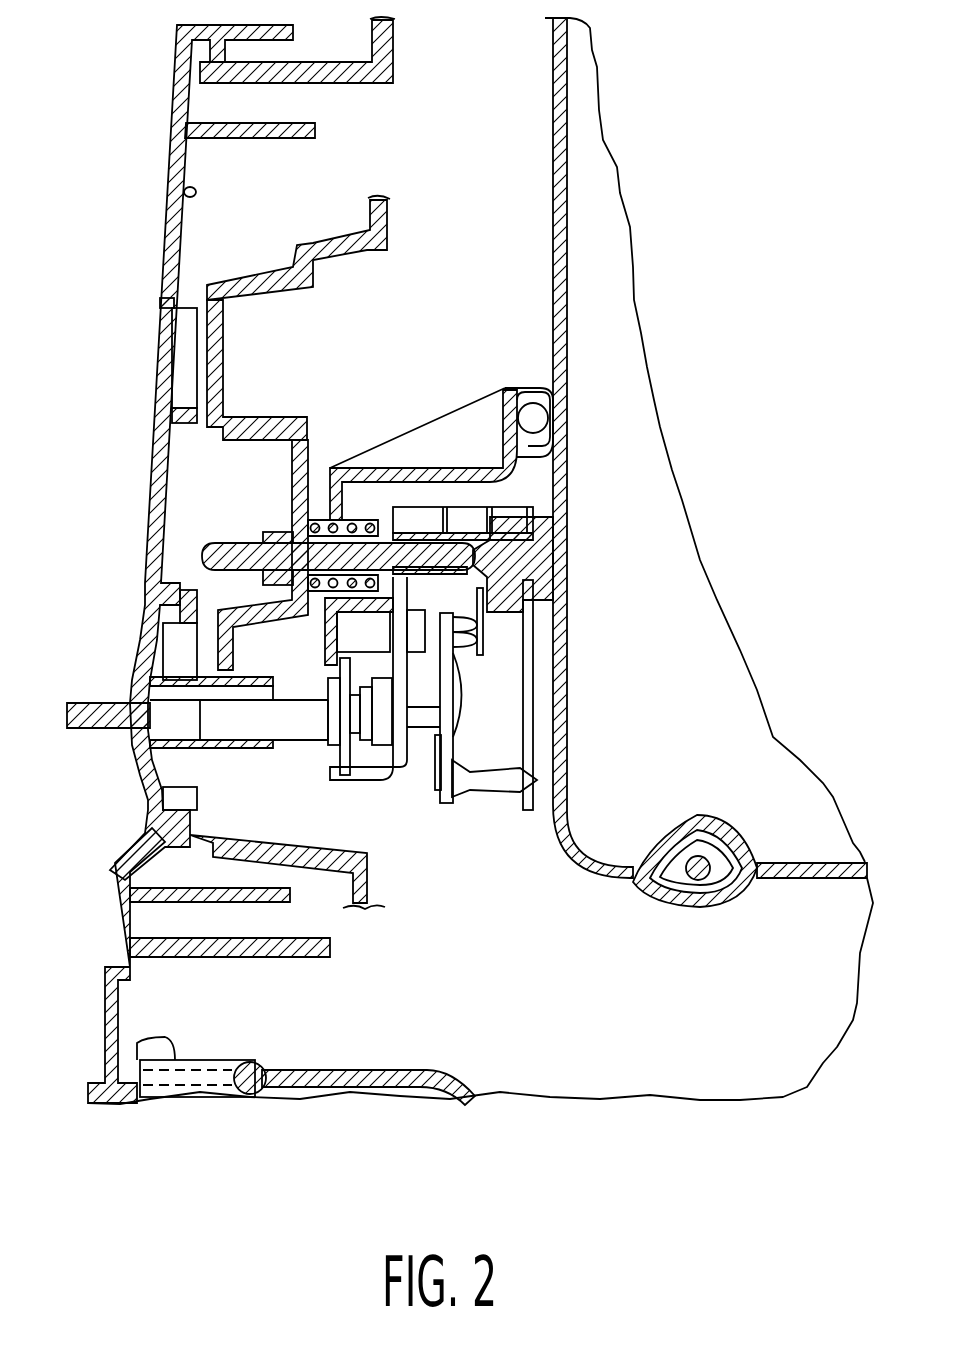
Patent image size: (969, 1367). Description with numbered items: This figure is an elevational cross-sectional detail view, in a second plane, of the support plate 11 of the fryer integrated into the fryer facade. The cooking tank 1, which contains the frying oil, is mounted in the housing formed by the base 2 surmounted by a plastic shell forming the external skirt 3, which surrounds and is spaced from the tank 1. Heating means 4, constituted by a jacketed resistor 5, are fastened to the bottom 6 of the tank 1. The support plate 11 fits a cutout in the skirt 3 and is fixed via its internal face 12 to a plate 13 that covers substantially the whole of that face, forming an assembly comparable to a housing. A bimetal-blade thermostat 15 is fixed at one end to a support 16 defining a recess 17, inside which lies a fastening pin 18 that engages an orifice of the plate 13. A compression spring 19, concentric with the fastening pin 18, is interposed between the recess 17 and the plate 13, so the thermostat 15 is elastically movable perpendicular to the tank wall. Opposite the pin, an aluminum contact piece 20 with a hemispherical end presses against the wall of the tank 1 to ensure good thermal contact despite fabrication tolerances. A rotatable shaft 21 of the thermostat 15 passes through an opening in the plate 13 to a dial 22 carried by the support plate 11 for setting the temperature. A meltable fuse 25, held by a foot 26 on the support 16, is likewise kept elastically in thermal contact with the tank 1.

The tank 1 is at (565, 95).
The base 2 is at (105, 1040).
The skirt 3 is at (203, 27).
The heating means 4 is at (747, 906).
The jacketed resistor 5 is at (705, 855).
The bottom 6 is at (822, 865).
The support plate 11 is at (150, 466).
The internal face 12 is at (186, 192).
The plate 13 is at (247, 280).
The thermostat 15 is at (522, 498).
The support 16 is at (327, 640).
The recess 17 is at (358, 522).
The fastening pin 18 is at (205, 556).
The compression spring 19 is at (313, 524).
The contact piece 20 is at (525, 566).
The shaft 21 is at (255, 735).
The dial 22 is at (87, 698).
The meltable fuse 25 is at (545, 410).
The foot 26 is at (520, 462).